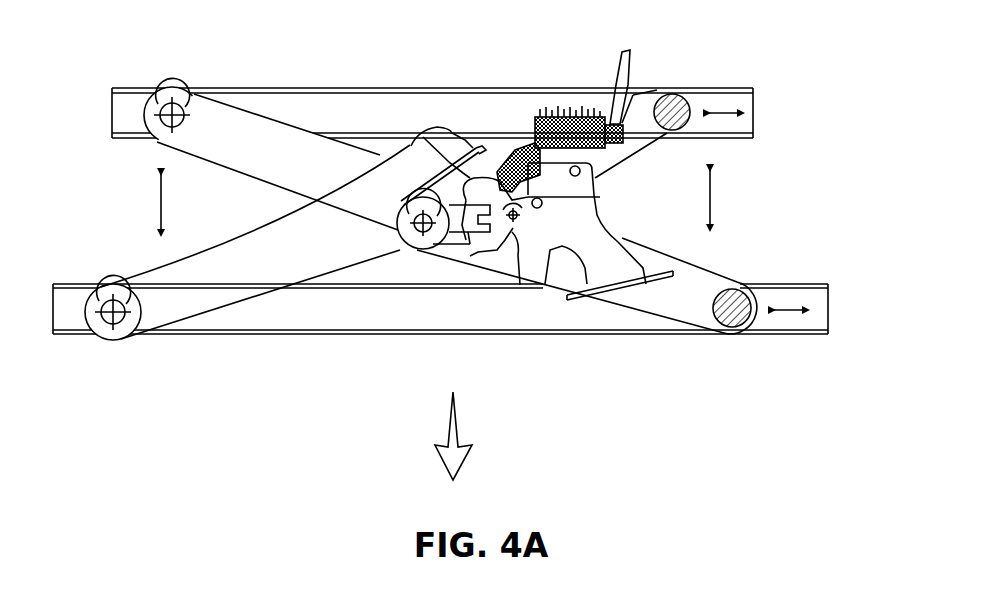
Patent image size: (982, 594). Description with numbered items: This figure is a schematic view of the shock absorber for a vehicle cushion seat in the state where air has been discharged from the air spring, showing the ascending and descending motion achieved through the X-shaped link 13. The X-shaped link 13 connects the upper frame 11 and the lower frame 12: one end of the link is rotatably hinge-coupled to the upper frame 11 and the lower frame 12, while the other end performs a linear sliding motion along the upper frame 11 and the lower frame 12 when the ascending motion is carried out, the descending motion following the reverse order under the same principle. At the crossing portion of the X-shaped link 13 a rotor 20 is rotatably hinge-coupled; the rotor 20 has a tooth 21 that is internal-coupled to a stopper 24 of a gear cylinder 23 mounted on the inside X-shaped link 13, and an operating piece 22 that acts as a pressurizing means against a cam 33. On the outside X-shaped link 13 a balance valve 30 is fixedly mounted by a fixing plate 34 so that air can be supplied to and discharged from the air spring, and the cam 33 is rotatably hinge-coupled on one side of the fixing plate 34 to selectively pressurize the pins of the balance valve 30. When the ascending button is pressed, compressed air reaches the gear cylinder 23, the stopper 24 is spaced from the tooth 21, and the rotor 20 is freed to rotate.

The upper frame 11 is at (284, 100).
The lower frame 12 is at (352, 335).
The X-shaped link 13 is at (300, 226).
The rotor 20 is at (411, 146).
The tooth 21 is at (477, 150).
The operating piece 22 is at (447, 248).
The gear cylinder 23 is at (578, 112).
The stopper 24 is at (517, 147).
The balance valve 30 is at (543, 249).
The cam 33 is at (500, 250).
The fixing plate 34 is at (580, 208).